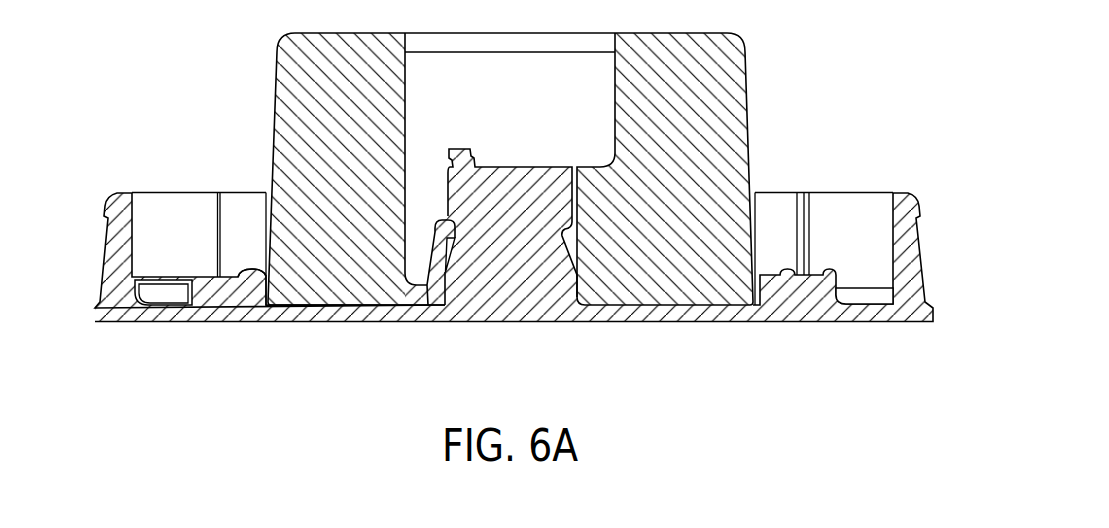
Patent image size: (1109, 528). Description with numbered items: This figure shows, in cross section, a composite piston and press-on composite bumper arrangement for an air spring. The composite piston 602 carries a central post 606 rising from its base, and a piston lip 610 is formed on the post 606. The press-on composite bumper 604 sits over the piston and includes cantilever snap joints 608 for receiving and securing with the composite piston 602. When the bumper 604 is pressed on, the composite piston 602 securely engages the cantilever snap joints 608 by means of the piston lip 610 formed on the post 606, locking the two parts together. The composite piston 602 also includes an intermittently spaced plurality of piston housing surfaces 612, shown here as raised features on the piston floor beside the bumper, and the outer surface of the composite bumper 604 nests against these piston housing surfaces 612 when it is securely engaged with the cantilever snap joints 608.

The composite piston 602 is at (919, 246).
The press-on composite bumper 604 is at (748, 108).
The post 606 is at (523, 283).
The cantilever snap joints 608 is at (450, 288).
The piston lip 610 is at (442, 222).
The piston housing surfaces 612 is at (250, 288).